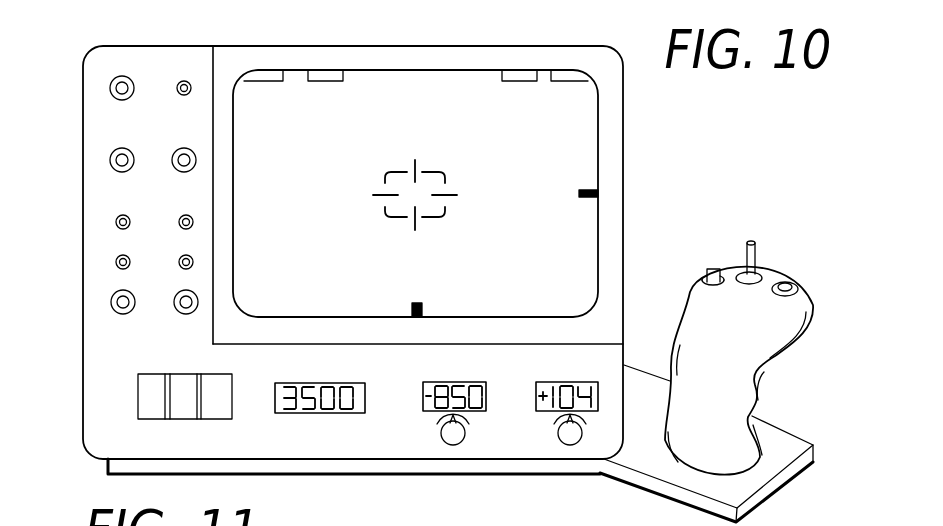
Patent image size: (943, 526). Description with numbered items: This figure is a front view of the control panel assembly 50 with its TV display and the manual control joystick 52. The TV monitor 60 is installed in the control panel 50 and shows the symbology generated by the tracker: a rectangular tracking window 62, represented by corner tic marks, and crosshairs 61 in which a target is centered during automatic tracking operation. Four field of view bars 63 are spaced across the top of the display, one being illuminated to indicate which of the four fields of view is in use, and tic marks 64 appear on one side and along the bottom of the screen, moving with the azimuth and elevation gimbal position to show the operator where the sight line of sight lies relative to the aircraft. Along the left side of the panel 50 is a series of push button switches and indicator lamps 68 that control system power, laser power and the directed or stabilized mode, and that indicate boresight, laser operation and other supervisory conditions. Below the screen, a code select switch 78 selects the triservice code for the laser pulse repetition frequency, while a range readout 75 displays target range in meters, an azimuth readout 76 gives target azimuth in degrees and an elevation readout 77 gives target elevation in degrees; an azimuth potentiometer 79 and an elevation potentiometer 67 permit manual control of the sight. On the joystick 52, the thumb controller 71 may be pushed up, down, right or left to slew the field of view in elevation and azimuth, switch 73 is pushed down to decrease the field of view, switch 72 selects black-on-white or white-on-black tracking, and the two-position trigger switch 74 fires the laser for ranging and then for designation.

The control panel assembly 50 is at (121, 74).
The joystick 52 is at (680, 457).
The TV monitor 60 is at (456, 86).
The crosshairs 61 is at (417, 160).
The tracking window 62 is at (384, 213).
The field of view bars 63 is at (320, 81).
The tic marks 64 is at (579, 193).
The elevation potentiometer 67 is at (558, 431).
The push button switches and indicator lamps 68 is at (87, 70).
The joystick thumb controller 71 is at (751, 242).
The switch 72 is at (712, 268).
The switch 73 is at (787, 282).
The joystick trigger switch 74 is at (766, 368).
The range readout 75 is at (323, 413).
The azimuth readout 76 is at (430, 381).
The elevation readout 77 is at (544, 381).
The code select switch 78 is at (143, 388).
The azimuth potentiometer 79 is at (441, 431).